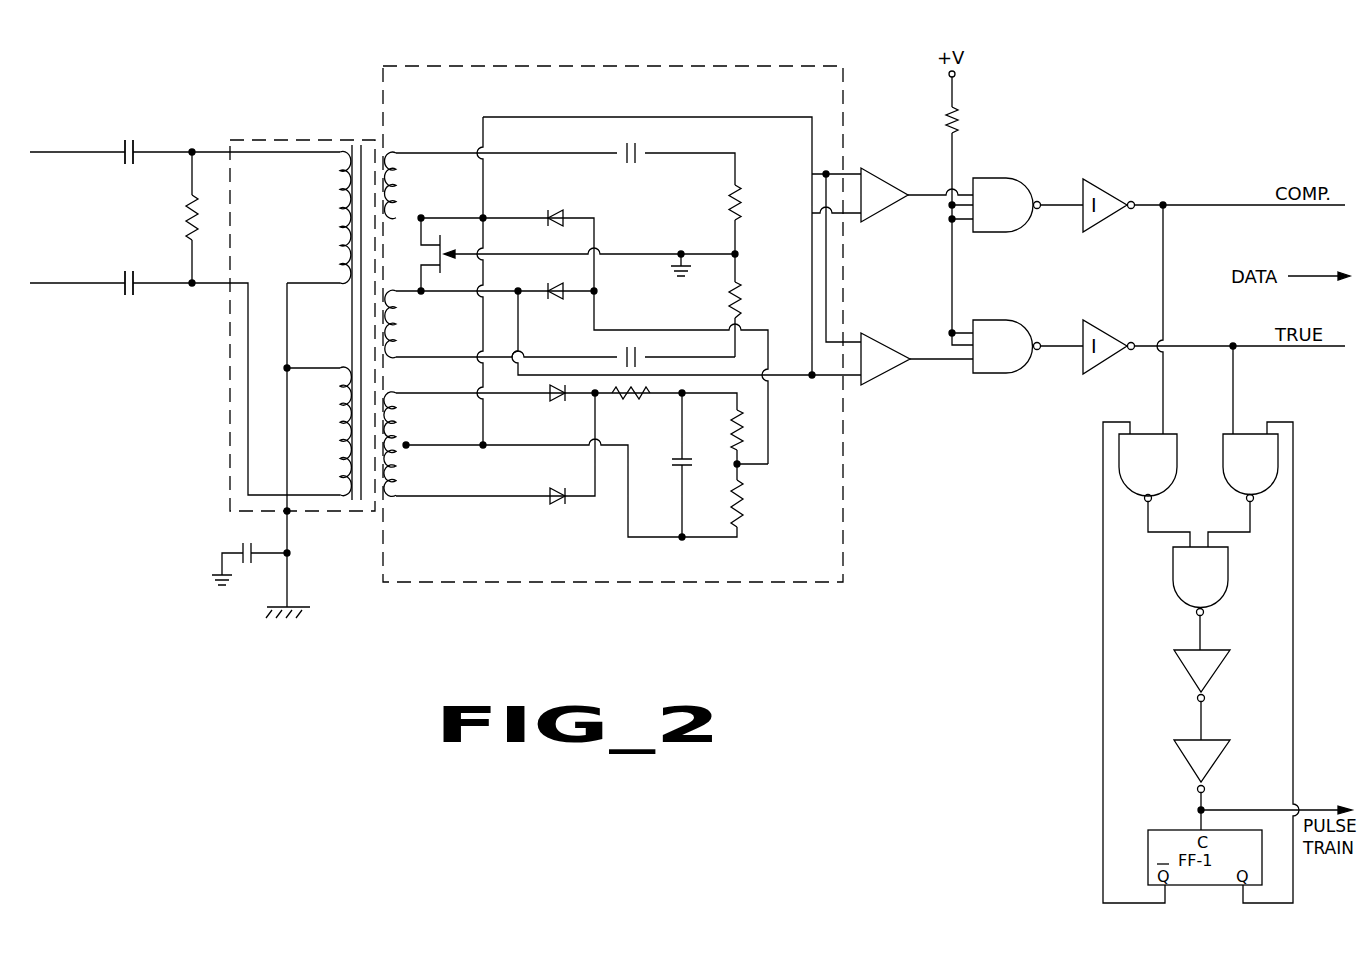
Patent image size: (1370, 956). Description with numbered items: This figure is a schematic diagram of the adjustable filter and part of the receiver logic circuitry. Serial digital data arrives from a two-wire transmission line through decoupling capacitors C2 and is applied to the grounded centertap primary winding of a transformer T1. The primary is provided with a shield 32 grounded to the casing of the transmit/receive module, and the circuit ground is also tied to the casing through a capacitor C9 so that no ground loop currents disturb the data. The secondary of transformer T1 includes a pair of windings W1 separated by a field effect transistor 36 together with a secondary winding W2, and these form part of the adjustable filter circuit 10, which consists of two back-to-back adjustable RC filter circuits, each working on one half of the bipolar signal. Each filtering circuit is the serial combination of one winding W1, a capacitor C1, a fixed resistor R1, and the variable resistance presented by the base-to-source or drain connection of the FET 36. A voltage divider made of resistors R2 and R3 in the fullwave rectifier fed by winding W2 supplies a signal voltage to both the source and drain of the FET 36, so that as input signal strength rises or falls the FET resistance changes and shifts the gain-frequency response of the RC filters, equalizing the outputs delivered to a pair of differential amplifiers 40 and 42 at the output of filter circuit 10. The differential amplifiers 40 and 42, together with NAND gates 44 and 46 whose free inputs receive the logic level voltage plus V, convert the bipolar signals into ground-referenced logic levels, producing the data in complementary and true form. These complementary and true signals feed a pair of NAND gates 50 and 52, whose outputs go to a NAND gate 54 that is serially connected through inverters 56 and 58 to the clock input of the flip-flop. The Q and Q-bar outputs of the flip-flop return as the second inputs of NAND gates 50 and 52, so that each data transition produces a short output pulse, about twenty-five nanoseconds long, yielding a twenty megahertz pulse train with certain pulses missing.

The adjustable filter circuit 10 is at (720, 66).
The shield 32 is at (265, 140).
The transformer T1 is at (348, 135).
The windings W1 is at (405, 190).
The secondary winding W2 is at (405, 478).
The field effect transistor 36 is at (452, 242).
The capacitor C1 is at (636, 147).
The decoupling capacitors C2 is at (133, 273).
The capacitor C9 is at (240, 549).
The fixed resistor R1 is at (741, 195).
The resistor R2 is at (733, 426).
The resistor R3 is at (733, 500).
The differential amplifier 40 is at (878, 188).
The differential amplifier 42 is at (878, 352).
The NAND gate 44 is at (1003, 182).
The NAND gate 46 is at (1003, 323).
The NAND gate 50 is at (1168, 436).
The NAND gate 52 is at (1238, 484).
The NAND gate 54 is at (1228, 577).
The inverter 56 is at (1218, 674).
The inverter 58 is at (1218, 764).